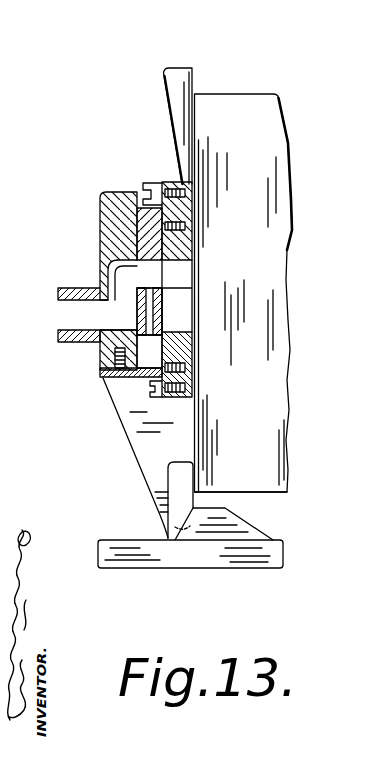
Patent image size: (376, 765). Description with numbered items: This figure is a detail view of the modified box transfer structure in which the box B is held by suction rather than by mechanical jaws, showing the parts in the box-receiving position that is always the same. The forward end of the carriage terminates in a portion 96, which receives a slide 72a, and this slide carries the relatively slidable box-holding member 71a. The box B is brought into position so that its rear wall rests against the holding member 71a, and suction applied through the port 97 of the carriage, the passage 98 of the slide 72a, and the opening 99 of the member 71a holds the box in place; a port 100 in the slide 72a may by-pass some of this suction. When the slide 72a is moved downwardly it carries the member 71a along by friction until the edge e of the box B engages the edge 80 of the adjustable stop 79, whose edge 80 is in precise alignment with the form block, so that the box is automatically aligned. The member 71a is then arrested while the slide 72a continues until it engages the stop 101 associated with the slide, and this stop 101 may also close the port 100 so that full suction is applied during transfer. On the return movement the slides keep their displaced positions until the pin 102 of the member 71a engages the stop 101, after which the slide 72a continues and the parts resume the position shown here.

The box B is at (216, 103).
The box-holding member 71a is at (172, 181).
The slide 72a is at (140, 207).
The portion of carriage 96 is at (101, 200).
The port 97 is at (58, 303).
The passage 98 is at (142, 262).
The opening 99 is at (185, 265).
The port 100 is at (149, 315).
The stop 101 is at (103, 393).
The pin 102 is at (151, 398).
The stop 79 is at (168, 538).
The edge of stop 80 is at (172, 542).
The edge of box e is at (226, 492).